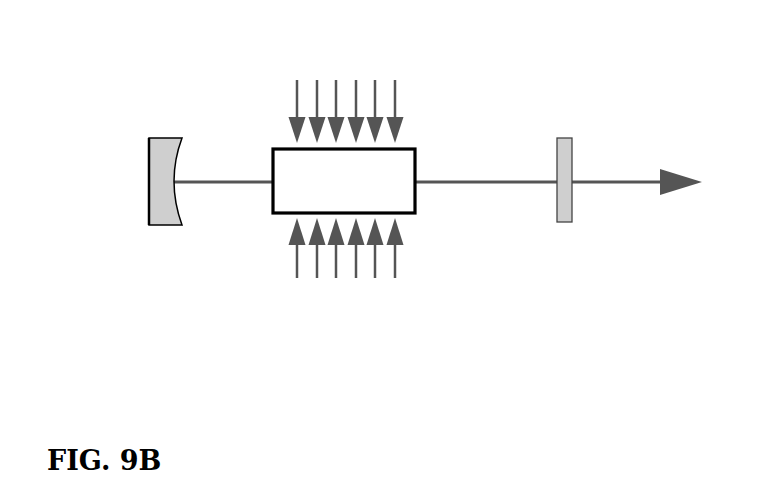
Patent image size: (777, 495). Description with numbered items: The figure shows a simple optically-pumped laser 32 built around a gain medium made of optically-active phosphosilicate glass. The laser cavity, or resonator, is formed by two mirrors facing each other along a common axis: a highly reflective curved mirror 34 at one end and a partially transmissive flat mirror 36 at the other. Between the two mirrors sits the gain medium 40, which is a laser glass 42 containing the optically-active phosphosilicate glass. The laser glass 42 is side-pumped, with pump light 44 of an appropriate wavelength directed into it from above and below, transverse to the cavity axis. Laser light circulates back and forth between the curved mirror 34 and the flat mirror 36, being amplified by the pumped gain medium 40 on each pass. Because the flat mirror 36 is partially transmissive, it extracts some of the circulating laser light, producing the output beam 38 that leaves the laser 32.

The optically-pumped laser 32 is at (550, 72).
The highly reflective curved mirror 34 is at (158, 223).
The partially transmissive flat mirror 36 is at (557, 215).
The output beam 38 is at (648, 183).
The gain medium 40 is at (270, 127).
The laser glass 42 is at (350, 193).
The pump light 44 is at (337, 260).